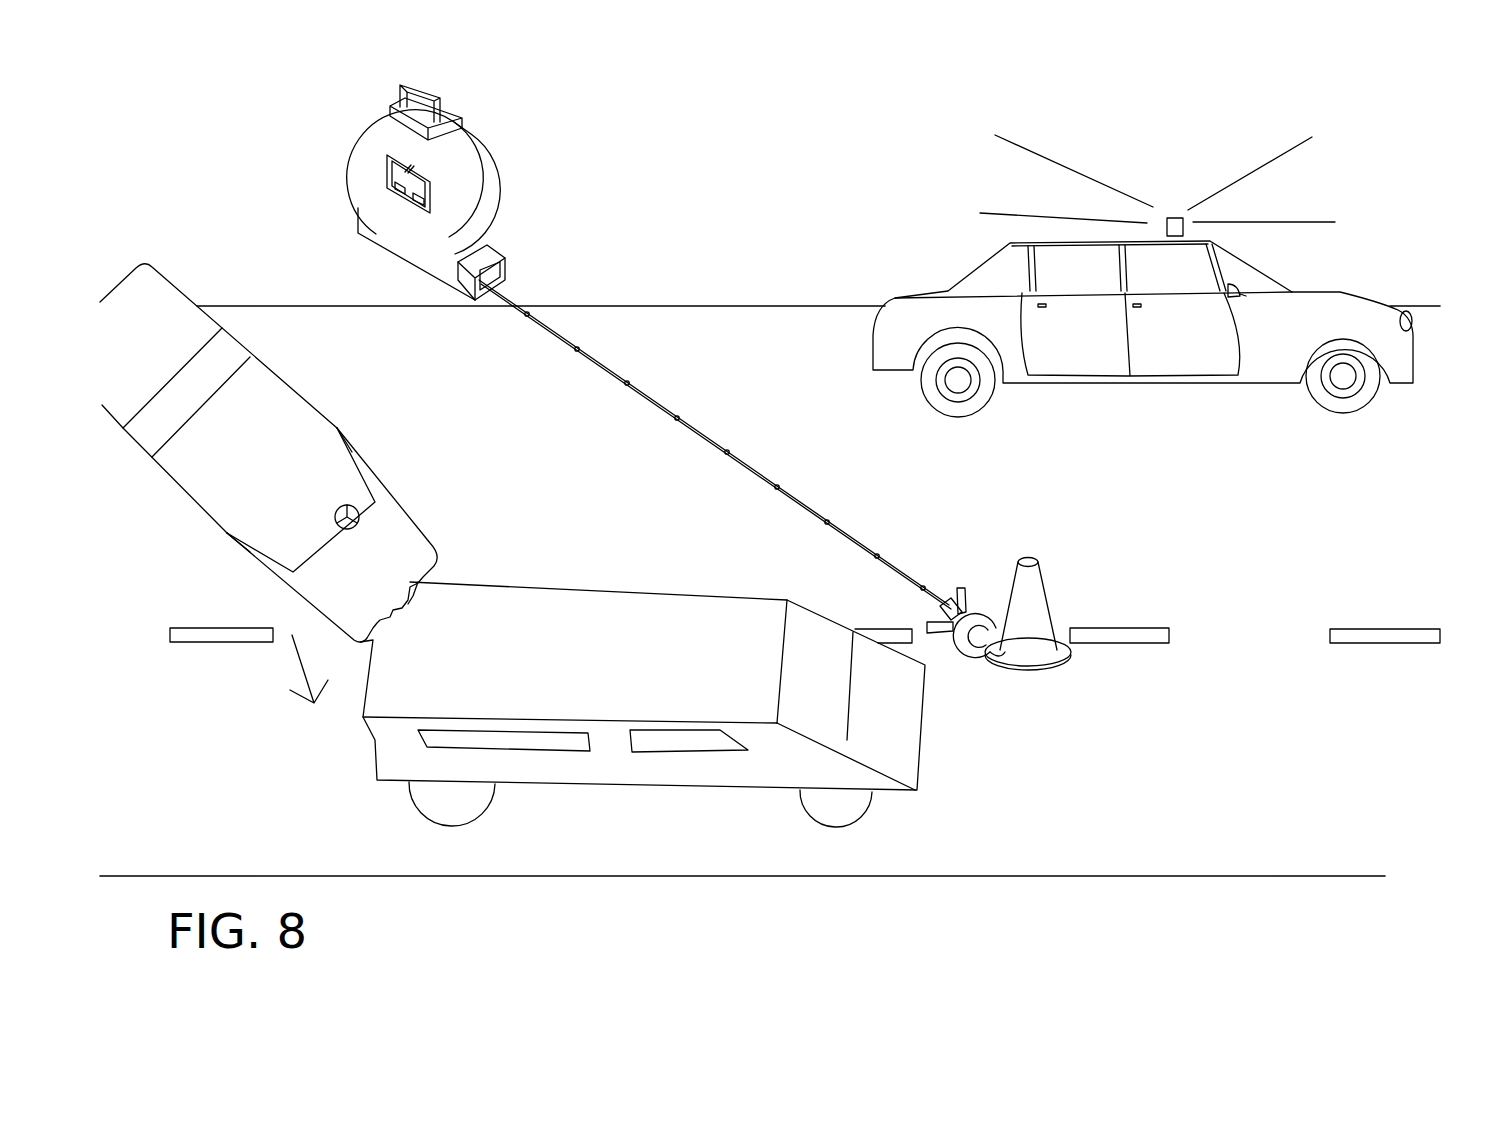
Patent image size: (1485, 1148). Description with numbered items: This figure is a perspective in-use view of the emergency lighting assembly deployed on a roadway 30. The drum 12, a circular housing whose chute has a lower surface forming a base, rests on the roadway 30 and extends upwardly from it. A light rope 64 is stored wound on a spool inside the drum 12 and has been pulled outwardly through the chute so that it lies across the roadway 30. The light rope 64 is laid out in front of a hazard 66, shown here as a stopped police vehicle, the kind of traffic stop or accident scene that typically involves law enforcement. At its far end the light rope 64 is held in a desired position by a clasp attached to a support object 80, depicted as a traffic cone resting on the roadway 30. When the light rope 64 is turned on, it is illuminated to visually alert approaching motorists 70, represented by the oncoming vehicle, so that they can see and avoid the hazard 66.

The drum 12 is at (470, 137).
The roadway 30 is at (778, 360).
The light rope 64 is at (640, 382).
The hazard 66 is at (948, 240).
The motorists 70 is at (233, 333).
The support object 80 is at (1050, 668).